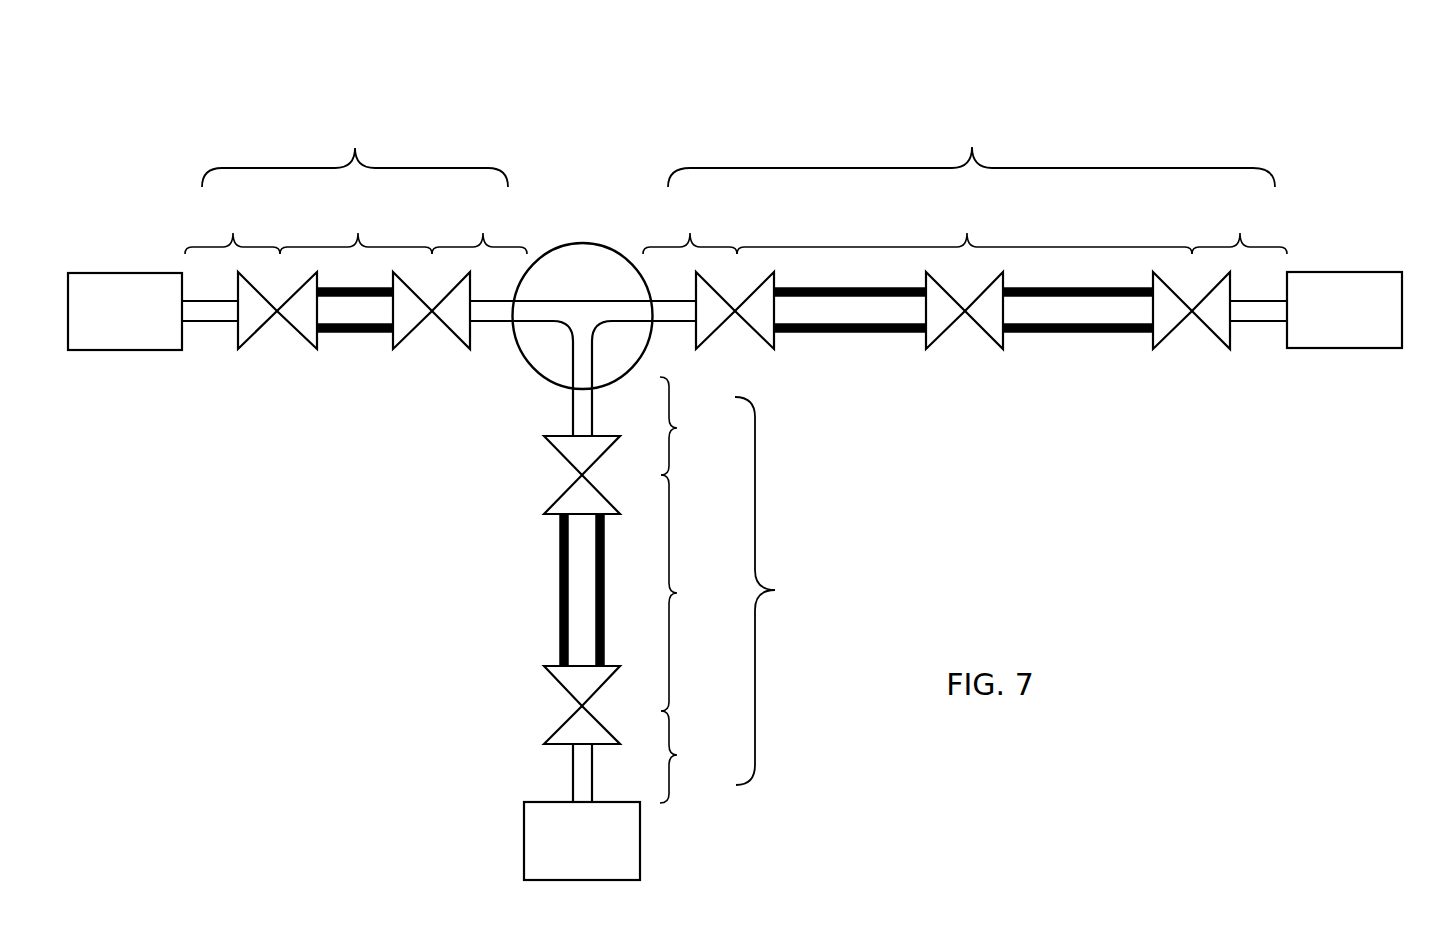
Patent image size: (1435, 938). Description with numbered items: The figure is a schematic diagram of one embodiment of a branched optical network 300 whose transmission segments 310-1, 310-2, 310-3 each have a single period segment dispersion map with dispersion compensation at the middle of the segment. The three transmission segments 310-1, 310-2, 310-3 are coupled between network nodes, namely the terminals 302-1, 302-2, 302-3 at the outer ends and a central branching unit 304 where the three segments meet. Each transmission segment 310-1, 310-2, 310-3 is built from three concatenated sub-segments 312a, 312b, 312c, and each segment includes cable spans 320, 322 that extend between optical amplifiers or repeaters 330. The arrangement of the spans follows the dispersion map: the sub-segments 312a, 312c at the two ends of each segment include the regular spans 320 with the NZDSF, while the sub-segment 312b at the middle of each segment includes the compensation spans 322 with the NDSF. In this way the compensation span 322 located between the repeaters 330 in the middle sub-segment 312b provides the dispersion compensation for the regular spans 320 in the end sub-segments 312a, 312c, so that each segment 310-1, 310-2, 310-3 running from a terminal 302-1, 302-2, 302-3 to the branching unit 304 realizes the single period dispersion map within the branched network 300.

The branched optical network 300 is at (757, 114).
The terminal 302-1 is at (91, 326).
The terminal 302-2 is at (1311, 326).
The terminal 302-3 is at (548, 853).
The branching unit 304 is at (563, 252).
The transmission segment 310-1 is at (355, 151).
The transmission segment 310-2 is at (971, 151).
The transmission segment 310-3 is at (802, 591).
The sub-segment 312a is at (464, 338).
The sub-segment 312b is at (736, 456).
The sub-segment 312c is at (859, 502).
The regular span 320 is at (212, 323).
The compensation span 322 is at (360, 333).
The optical amplifier or repeater 330 is at (295, 333).